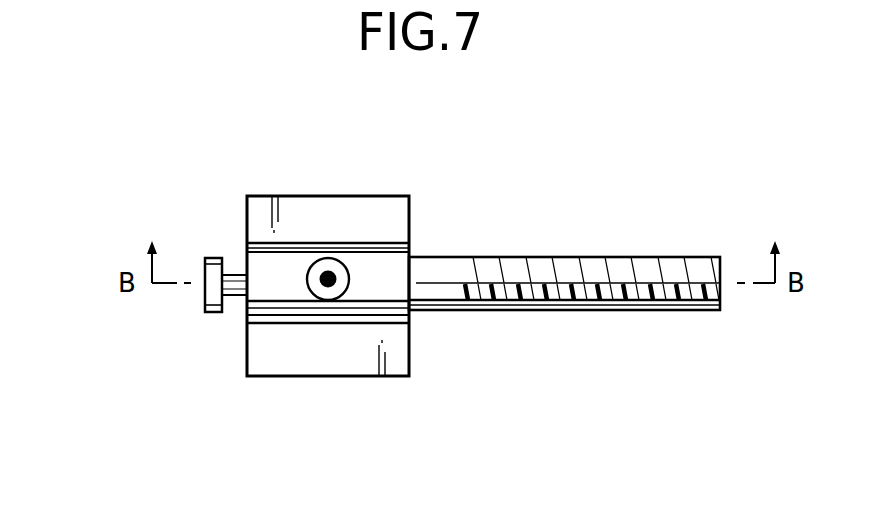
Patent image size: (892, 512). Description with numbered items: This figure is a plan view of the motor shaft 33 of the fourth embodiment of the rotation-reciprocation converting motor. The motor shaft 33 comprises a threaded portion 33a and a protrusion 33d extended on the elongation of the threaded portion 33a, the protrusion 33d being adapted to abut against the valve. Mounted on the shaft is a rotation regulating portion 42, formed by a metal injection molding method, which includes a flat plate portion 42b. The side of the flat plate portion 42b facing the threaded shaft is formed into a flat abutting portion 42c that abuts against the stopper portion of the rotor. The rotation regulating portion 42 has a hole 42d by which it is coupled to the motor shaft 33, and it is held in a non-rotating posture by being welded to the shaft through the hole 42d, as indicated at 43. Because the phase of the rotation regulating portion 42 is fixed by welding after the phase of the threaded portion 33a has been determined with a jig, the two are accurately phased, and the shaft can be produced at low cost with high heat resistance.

The motor shaft 33 is at (563, 165).
The threaded portion 33a is at (670, 256).
The protrusion 33d is at (205, 306).
The rotation regulating portion 42 is at (383, 270).
The flat plate portion 42b is at (282, 362).
The abutting portion 42c is at (410, 215).
The hole 42d is at (330, 298).
The weld 43 is at (330, 259).